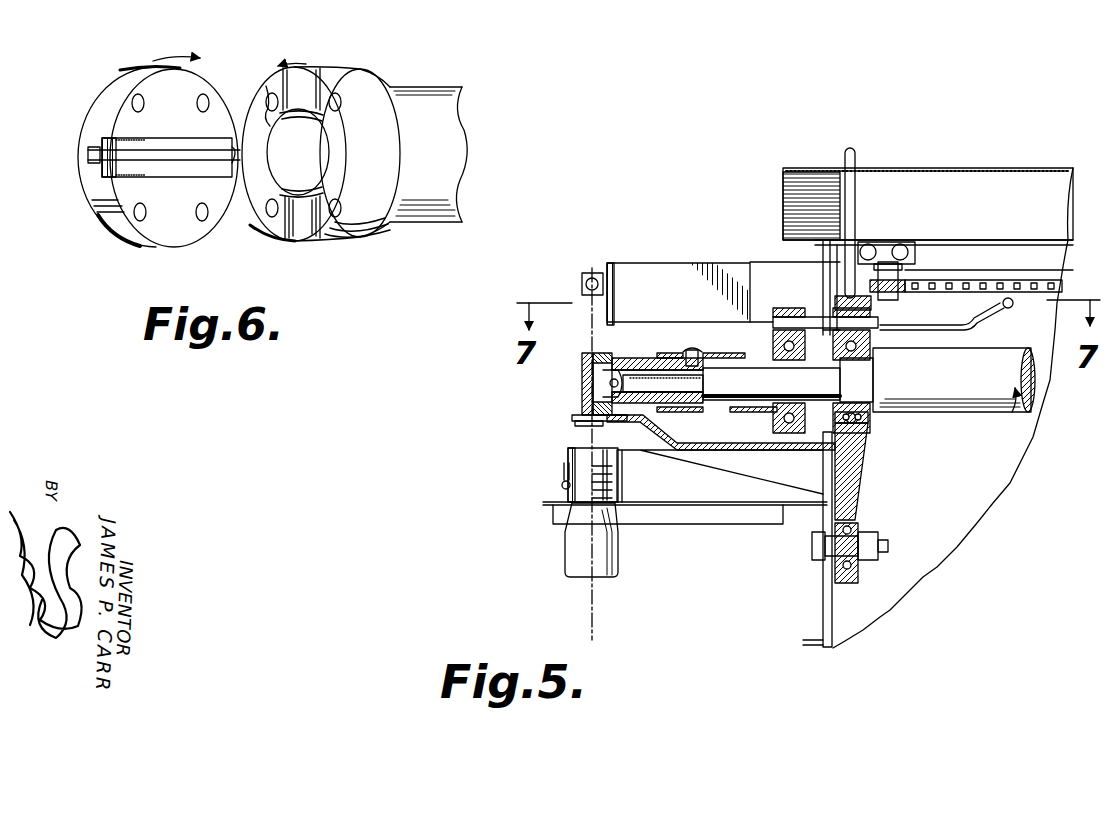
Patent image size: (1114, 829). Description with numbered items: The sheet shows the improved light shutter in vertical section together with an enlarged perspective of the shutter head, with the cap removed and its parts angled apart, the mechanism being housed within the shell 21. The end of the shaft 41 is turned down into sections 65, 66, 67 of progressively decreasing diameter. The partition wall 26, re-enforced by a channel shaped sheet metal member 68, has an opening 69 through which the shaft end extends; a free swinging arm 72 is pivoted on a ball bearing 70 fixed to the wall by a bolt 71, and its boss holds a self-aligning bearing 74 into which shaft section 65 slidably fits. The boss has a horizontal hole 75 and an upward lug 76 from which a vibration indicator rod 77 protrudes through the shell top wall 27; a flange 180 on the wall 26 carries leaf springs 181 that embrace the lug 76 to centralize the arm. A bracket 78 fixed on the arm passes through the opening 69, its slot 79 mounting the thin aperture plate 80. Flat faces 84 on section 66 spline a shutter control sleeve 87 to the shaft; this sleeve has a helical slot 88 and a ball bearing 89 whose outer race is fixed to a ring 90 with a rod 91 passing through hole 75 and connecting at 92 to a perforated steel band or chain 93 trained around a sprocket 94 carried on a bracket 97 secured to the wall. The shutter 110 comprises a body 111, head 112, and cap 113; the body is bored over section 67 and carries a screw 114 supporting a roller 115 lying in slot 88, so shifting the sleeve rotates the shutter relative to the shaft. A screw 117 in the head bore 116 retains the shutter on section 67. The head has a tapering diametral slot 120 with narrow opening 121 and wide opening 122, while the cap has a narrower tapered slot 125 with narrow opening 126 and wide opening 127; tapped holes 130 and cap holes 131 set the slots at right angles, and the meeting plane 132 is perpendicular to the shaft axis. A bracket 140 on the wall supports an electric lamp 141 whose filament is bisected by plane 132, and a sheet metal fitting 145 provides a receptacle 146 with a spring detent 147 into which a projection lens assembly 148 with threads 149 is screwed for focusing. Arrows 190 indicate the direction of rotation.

In FIG. 5, the frame 21 is at (906, 168).
In FIG. 5, the partition wall 26 is at (832, 608).
In FIG. 5, the shell top wall 27 is at (971, 168).
In FIG. 5, the shaft 41 is at (962, 388).
In FIG. 5, the shaft section 65 is at (873, 382).
In FIG. 5, the shaft section 66 is at (740, 430).
In FIG. 5, the shaft section 67 is at (676, 413).
In FIG. 5, the channel shaped sheet metal member 68 is at (823, 602).
In FIG. 5, the opening 69 is at (835, 310).
In FIG. 5, the ball bearing 70 is at (860, 526).
In FIG. 5, the bolt 71 is at (826, 546).
In FIG. 5, the free swinging arm 72 is at (856, 466).
In FIG. 5, the self-aligning bearing 74 is at (868, 420).
In FIG. 5, the horizontal hole 75 is at (878, 328).
In FIG. 5, the lug 76 is at (872, 305).
In FIG. 5, the vibration indicator rod 77 is at (856, 206).
In FIG. 5, the bracket 78 is at (710, 455).
In FIG. 5, the slot 79 is at (578, 426).
In FIG. 5, the aperture plate 80 is at (572, 418).
In FIG. 5, the flat faces 84 is at (735, 384).
In FIG. 5, the shutter control sleeve 87 is at (720, 352).
In FIG. 5, the helical slot 88 is at (745, 412).
In FIG. 5, the ball bearing 89 is at (775, 346).
In FIG. 5, the ring 90 is at (778, 309).
In FIG. 5, the rod 91 is at (970, 330).
In FIG. 5, the connection 92 is at (1012, 308).
In FIG. 5, the perforated steel band or chain 93 is at (1016, 282).
In FIG. 5, the sprocket 94 is at (905, 285).
In FIG. 5, the bracket 97 is at (900, 264).
In FIG. 6, the shutter 110 is at (414, 82).
In FIG. 5, the shutter 110 is at (615, 356).
In FIG. 6, the shutter body 111 is at (432, 100).
In FIG. 5, the shutter body 111 is at (643, 358).
In FIG. 6, the shutter head 112 is at (364, 82).
In FIG. 5, the shutter head 112 is at (604, 352).
In FIG. 6, the shutter cap 113 is at (150, 69).
In FIG. 5, the shutter cap 113 is at (582, 360).
In FIG. 5, the screw 114 is at (692, 347).
In FIG. 5, the roller 115 is at (670, 353).
In FIG. 6, the bore 116 is at (284, 180).
In FIG. 5, the bore 116 is at (606, 394).
In FIG. 5, the screw 117 is at (604, 380).
In FIG. 6, the tapering diametral slot 120 is at (283, 90).
In FIG. 5, the tapering diametral slot 120 is at (600, 407).
In FIG. 6, the narrow opening 121 is at (308, 78).
In FIG. 6, the wide opening 122 is at (298, 241).
In FIG. 6, the tapered diametral slot 125 is at (102, 146).
In FIG. 6, the narrow opening 126 is at (236, 146).
In FIG. 6, the wide opening 127 is at (96, 160).
In FIG. 6, the tapped holes 130 is at (272, 112).
In FIG. 6, the holes 131 is at (136, 104).
In FIG. 5, the plane 132 is at (591, 604).
In FIG. 5, the bracket 140 is at (706, 264).
In FIG. 5, the electric lamp 141 is at (591, 273).
In FIG. 5, the sheet metal fitting 145 is at (684, 516).
In FIG. 5, the receptacle 146 is at (618, 470).
In FIG. 5, the spring detent 147 is at (561, 486).
In FIG. 5, the projection lens assembly 148 is at (580, 528).
In FIG. 5, the threads 149 is at (618, 490).
In FIG. 5, the flange 180 is at (868, 244).
In FIG. 5, the leaf springs 181 is at (823, 277).
In FIG. 6, the arrows 190 is at (172, 58).
In FIG. 5, the arrows 190 is at (1012, 412).